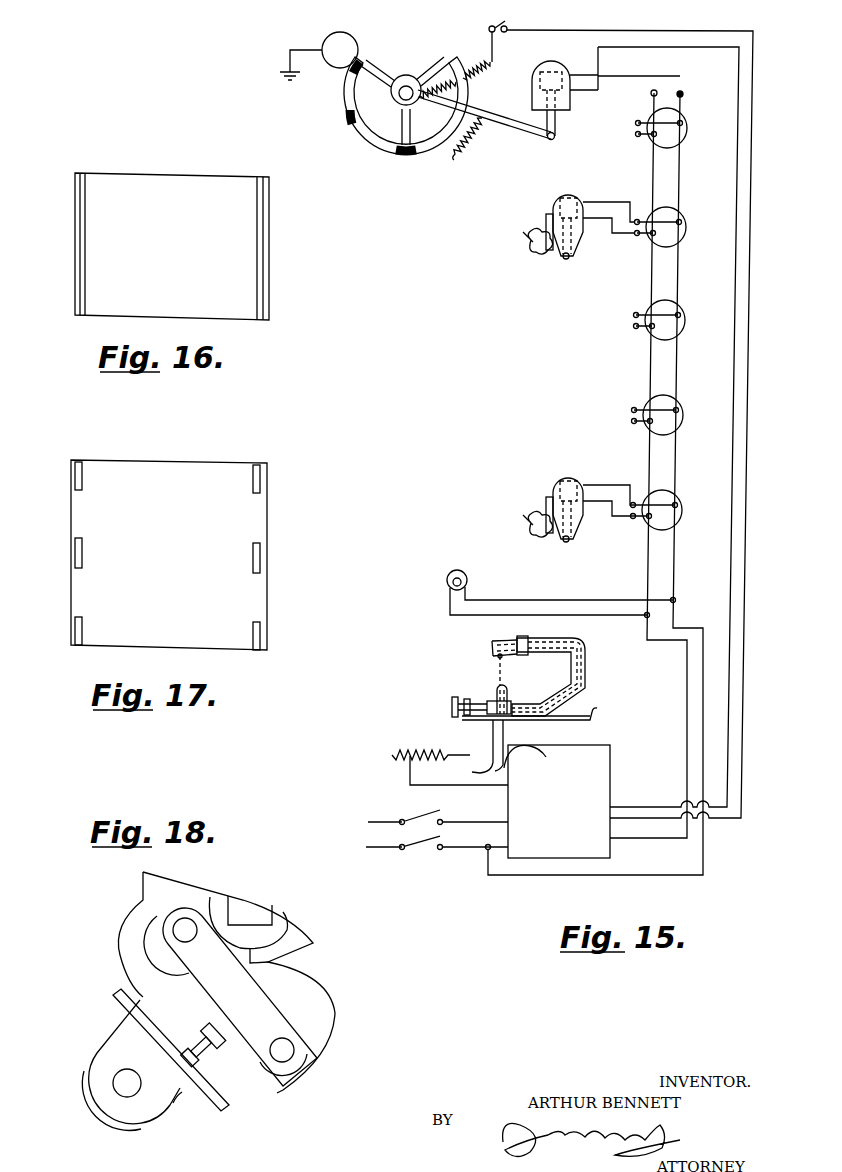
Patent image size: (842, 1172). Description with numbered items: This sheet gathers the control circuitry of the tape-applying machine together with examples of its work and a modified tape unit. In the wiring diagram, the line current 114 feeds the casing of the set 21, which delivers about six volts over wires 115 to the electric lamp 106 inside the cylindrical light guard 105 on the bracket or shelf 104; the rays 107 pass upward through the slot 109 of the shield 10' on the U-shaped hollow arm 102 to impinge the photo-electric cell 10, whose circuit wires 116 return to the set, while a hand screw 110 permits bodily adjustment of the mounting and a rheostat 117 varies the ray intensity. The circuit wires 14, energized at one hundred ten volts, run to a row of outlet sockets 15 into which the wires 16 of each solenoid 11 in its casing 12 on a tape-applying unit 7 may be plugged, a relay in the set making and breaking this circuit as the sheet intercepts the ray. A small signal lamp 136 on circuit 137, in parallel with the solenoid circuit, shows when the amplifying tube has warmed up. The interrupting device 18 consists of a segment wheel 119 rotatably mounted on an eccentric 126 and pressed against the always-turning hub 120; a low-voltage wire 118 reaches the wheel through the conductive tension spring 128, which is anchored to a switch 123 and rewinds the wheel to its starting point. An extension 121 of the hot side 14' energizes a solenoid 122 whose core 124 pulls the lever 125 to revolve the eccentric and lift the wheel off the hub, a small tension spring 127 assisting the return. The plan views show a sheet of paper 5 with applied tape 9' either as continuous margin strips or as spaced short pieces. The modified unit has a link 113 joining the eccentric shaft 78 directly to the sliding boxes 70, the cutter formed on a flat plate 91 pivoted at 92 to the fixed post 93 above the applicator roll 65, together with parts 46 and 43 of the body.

In FIG. 15, the hub 120 is at (350, 36).
In FIG. 15, the solenoid current interrupting device 18 is at (417, 55).
In FIG. 15, the eccentric 126 is at (418, 78).
In FIG. 15, the switch 123 is at (488, 18).
In FIG. 15, the tension spring 128 is at (480, 74).
In FIG. 15, the solenoid 122 is at (549, 70).
In FIG. 15, the wire 118 is at (670, 31).
In FIG. 15, the extension 121 is at (640, 76).
In FIG. 15, the segment wheel 119 is at (376, 142).
In FIG. 15, the tension spring 127 is at (470, 142).
In FIG. 15, the lever 125 is at (515, 128).
In FIG. 15, the core 124 is at (555, 136).
In FIG. 15, the outlet sockets 15 is at (688, 128).
In FIG. 15, the circuit wires 14 is at (648, 477).
In FIG. 15, the hot side 14' is at (603, 483).
In FIG. 15, the casing 12 is at (559, 199).
In FIG. 15, the solenoid 11 is at (575, 201).
In FIG. 15, the wires 16 is at (613, 227).
In FIG. 15, the tape-applying unit 7 is at (538, 256).
In FIG. 18, the tape-applying unit 7 is at (163, 884).
In FIG. 15, the signal lamp 136 is at (468, 582).
In FIG. 15, the circuit 137 is at (541, 615).
In FIG. 15, the photo-electric cell 10 is at (482, 648).
In FIG. 15, the shield 10' is at (514, 633).
In FIG. 15, the slot 109 is at (498, 658).
In FIG. 15, the rays 107 is at (503, 672).
In FIG. 15, the U-shaped hollow arm 102 is at (586, 673).
In FIG. 15, the light guard 105 is at (496, 693).
In FIG. 15, the electric lamp 106 is at (507, 690).
In FIG. 15, the hand screw 110 is at (452, 708).
In FIG. 15, the bracket or shelf 104 is at (544, 705).
In FIG. 15, the rheostat 117 is at (392, 755).
In FIG. 15, the wires 115 is at (493, 748).
In FIG. 15, the circuit wires 116 is at (533, 750).
In FIG. 15, the casing of the set 21 is at (566, 809).
In FIG. 15, the line current 114 is at (470, 824).
In FIG. 16, the sheet of paper 5 is at (191, 181).
In FIG. 17, the sheet of paper 5 is at (201, 468).
In FIG. 16, the applied tape 9' is at (172, 246).
In FIG. 17, the applied tape 9' is at (170, 556).
In FIG. 18, the pad 46 is at (218, 898).
In FIG. 18, the block 43 is at (257, 908).
In FIG. 18, the eccentric shaft 78 is at (145, 935).
In FIG. 18, the link 113 is at (255, 990).
In FIG. 18, the flat plate 91 is at (118, 1012).
In FIG. 18, the fixed post 93 is at (197, 1040).
In FIG. 18, the applicator roll 65 is at (88, 1085).
In FIG. 18, the pivot 92 is at (190, 1091).
In FIG. 18, the sliding boxes 70 is at (295, 1080).